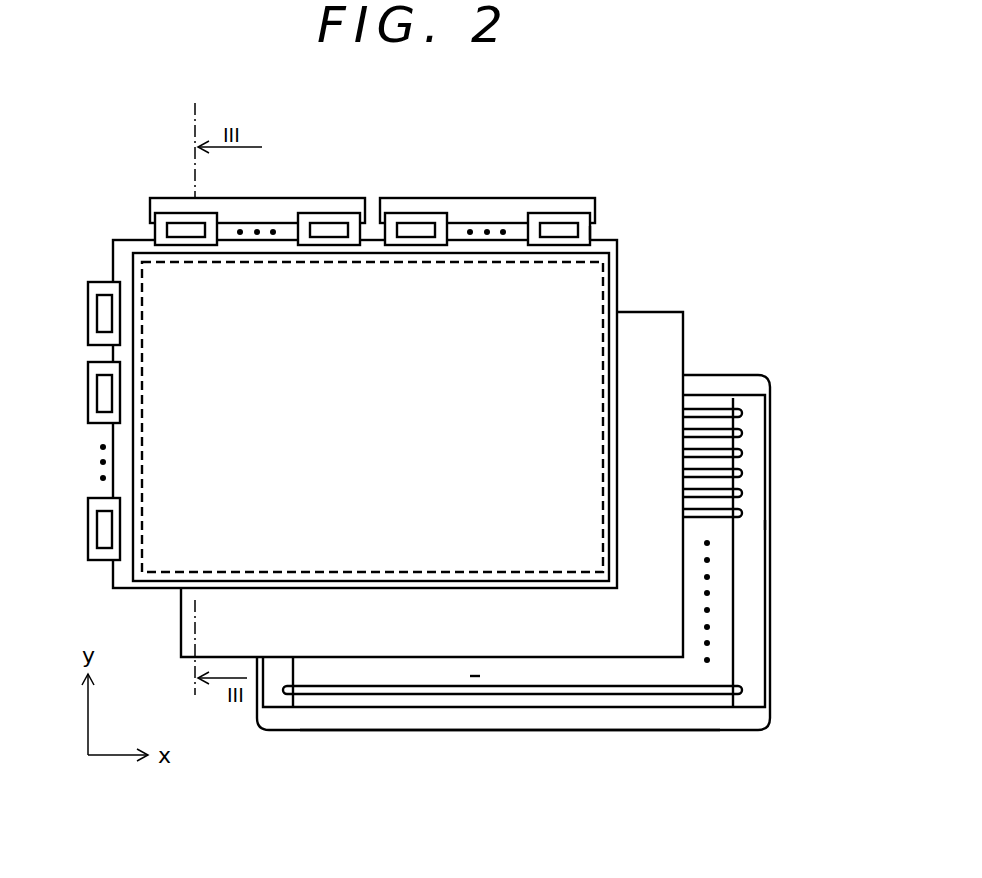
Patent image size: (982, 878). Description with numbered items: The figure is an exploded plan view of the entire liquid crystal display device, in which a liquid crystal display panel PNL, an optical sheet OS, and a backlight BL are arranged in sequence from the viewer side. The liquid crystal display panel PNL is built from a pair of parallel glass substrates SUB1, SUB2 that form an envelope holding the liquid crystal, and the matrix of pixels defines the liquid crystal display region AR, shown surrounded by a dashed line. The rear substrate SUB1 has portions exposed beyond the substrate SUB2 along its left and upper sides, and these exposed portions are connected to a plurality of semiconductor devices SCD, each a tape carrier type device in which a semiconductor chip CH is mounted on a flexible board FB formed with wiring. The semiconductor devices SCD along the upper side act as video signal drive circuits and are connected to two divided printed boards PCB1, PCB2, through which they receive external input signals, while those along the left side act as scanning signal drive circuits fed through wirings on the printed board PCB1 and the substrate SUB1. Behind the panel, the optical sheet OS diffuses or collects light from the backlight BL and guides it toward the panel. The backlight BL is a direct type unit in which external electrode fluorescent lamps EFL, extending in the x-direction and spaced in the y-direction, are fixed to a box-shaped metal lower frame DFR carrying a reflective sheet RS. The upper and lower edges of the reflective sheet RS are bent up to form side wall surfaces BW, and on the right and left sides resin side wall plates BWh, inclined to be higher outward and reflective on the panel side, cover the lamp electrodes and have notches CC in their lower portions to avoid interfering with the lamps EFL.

The liquid crystal display panel PNL is at (532, 164).
The substrate SUB1 is at (135, 238).
The substrate SUB2 is at (112, 567).
The liquid crystal display region AR is at (372, 417).
The printed board PCB1 is at (337, 197).
The printed board PCB2 is at (485, 197).
The semiconductor device SCD is at (180, 213).
The semiconductor chip CH is at (563, 222).
The flexible board FB is at (597, 230).
The optical sheet OS is at (649, 290).
The backlight BL is at (746, 353).
The side wall surface BW is at (713, 382).
The side wall plate BWh is at (747, 523).
The notch CC is at (745, 452).
The external electrode fluorescent lamp EFL is at (710, 520).
The reflective sheet RS is at (475, 678).
The lower frame DFR is at (587, 730).